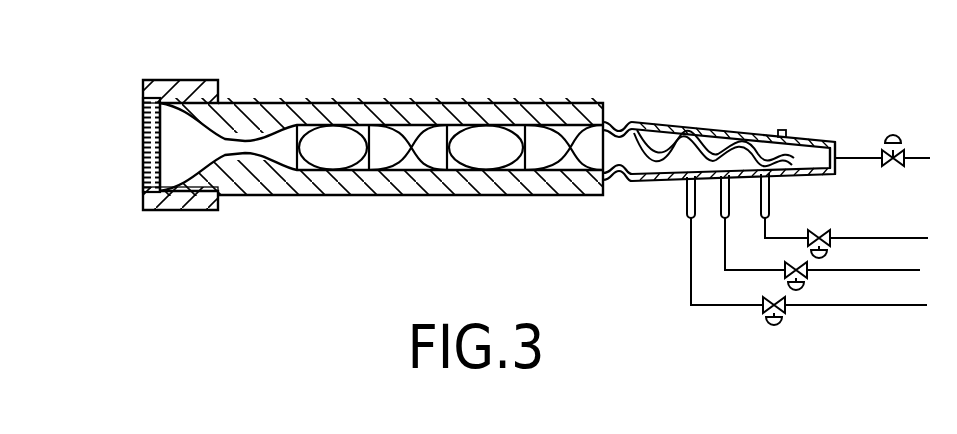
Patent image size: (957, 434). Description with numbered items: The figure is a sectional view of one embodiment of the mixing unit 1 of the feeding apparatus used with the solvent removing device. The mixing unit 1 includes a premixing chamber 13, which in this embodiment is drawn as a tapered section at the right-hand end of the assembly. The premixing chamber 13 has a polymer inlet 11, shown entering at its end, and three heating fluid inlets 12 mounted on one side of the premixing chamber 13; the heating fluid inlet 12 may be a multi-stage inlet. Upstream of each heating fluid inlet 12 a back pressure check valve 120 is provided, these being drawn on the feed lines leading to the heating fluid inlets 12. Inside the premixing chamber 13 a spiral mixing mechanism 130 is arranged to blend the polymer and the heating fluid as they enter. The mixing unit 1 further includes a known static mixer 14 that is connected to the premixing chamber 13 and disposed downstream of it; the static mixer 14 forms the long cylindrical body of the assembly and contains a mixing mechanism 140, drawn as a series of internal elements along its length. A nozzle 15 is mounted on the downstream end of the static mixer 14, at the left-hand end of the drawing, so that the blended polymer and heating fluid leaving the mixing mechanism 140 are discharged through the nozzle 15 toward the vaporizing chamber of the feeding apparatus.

The mixing unit 1 is at (546, 104).
The nozzle 15 is at (143, 147).
The static mixer 14 is at (378, 170).
The mixing mechanism 140 is at (481, 160).
The premixing chamber 13 is at (655, 140).
The spiral mixing mechanism 130 is at (710, 131).
The polymer inlet 11 is at (849, 157).
The heating fluid inlet 12 is at (687, 192).
The back pressure check valve 120 is at (762, 305).